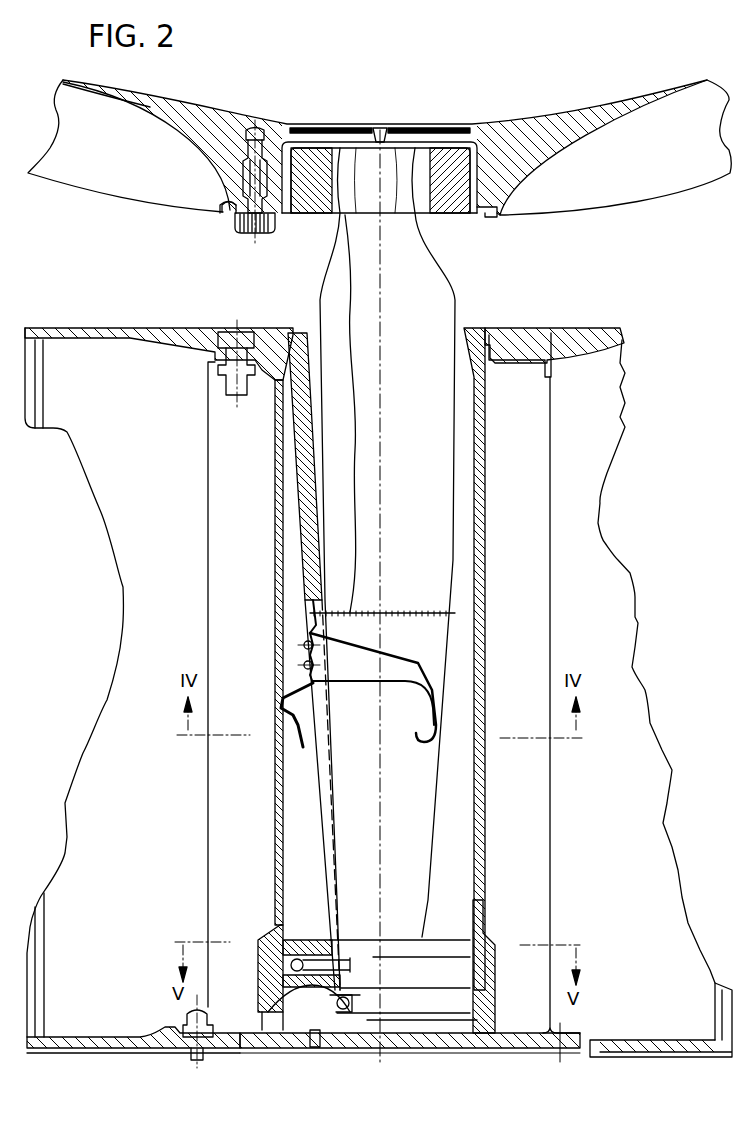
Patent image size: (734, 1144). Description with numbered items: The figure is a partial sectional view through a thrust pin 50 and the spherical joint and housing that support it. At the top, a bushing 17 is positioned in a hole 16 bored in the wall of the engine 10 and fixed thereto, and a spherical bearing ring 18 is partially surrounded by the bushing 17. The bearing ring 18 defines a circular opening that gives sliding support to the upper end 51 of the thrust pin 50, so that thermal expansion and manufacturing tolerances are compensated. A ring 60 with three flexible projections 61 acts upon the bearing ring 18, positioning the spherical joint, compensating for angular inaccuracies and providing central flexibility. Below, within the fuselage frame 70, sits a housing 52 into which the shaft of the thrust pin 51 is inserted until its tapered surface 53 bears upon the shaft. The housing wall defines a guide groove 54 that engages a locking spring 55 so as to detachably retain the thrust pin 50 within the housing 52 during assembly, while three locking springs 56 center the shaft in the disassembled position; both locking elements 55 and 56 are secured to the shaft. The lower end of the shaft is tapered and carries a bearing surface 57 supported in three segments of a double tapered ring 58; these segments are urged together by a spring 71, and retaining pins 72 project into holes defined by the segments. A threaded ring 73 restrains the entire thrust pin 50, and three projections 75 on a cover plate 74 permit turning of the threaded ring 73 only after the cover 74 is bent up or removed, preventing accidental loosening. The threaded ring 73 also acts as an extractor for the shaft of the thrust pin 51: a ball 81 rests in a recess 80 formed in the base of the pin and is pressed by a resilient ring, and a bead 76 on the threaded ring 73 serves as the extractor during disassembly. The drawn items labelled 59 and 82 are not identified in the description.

The engine 10 is at (512, 136).
The hole 16 is at (440, 150).
The bushing 17 is at (286, 198).
The spherical bearing ring 18 is at (318, 162).
The thrust pin 50 is at (468, 323).
The upper end of the thrust pin 51 is at (338, 243).
The housing 52 is at (270, 372).
The tapered surface 53 is at (292, 218).
The guide groove 54 is at (280, 745).
The locking spring 55 is at (275, 690).
The locking springs 56 is at (342, 655).
The bearing surface 57 is at (282, 1018).
The double tapered ring 58 is at (255, 985).
The bearing ring 59 is at (296, 940).
The ring 60 is at (350, 128).
The flexible projections 61 is at (382, 130).
The fuselage frame 70 is at (92, 372).
The spring 71 is at (268, 950).
The retaining pins 72 is at (277, 892).
The threaded ring 73 is at (290, 1000).
The cover plate 74 is at (474, 1040).
The projections 75 is at (305, 975).
The bead 76 is at (316, 1010).
The recess 80 is at (352, 988).
The ball 81 is at (348, 1008).
The bolt 82 is at (342, 1010).